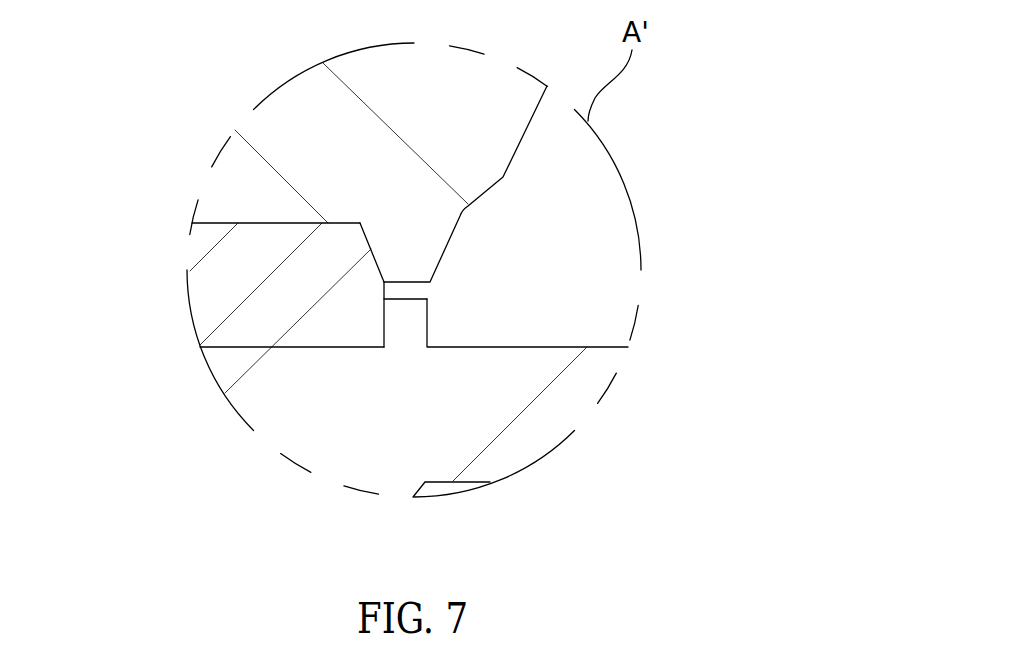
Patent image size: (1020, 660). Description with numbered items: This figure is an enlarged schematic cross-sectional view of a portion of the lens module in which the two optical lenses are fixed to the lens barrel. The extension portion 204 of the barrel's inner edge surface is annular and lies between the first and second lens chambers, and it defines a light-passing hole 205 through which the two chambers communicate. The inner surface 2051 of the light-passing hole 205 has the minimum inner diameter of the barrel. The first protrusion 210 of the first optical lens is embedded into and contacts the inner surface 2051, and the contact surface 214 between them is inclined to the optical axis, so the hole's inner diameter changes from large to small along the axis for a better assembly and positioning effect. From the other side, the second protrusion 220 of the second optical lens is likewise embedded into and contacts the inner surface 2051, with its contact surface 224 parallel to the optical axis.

The extension portion 204 is at (238, 288).
The light-passing hole 205 is at (568, 253).
The inner surface of the light-passing hole 2051 is at (384, 307).
The first protrusion 210 is at (413, 258).
The contact surface 214 is at (360, 240).
The second protrusion 220 is at (400, 328).
The contact surface 224 is at (384, 325).